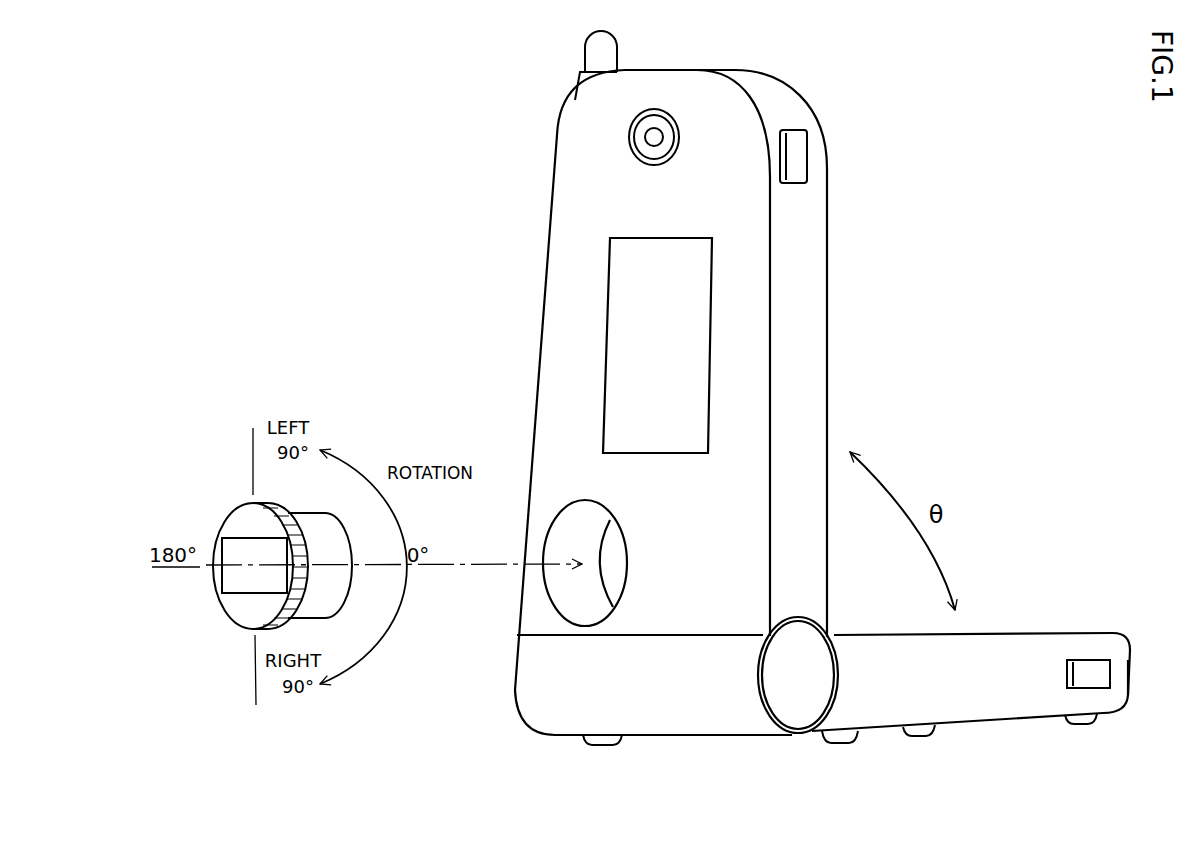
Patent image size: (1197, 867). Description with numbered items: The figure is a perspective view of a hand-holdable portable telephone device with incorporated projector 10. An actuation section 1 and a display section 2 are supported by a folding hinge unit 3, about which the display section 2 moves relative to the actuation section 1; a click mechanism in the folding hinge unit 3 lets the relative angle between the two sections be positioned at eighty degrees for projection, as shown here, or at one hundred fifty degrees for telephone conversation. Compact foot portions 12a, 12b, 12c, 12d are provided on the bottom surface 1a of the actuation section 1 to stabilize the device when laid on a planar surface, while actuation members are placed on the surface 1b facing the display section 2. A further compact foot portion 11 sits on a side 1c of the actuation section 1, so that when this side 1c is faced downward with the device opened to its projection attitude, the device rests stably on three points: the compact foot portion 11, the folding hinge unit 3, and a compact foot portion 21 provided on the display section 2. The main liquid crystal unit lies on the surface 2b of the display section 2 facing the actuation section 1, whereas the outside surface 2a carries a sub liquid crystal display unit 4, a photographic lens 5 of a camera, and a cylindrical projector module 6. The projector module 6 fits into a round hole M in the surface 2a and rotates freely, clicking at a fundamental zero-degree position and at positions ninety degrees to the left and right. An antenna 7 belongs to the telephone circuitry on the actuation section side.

The portable telephone device with incorporated projector 10 is at (1052, 325).
The actuation section 1 is at (885, 717).
The bottom surface 1a is at (1001, 726).
The surface 1b is at (1006, 630).
The side 1c is at (978, 695).
The display section 2 is at (778, 98).
The outside surface 2a is at (588, 207).
The surface 2b is at (830, 276).
The folding hinge unit 3 is at (786, 708).
The sub liquid crystal display unit 4 is at (617, 336).
The photographic lens 5 is at (656, 120).
The projector module 6 is at (226, 604).
The antenna 7 is at (585, 50).
The compact foot portion 11 is at (1092, 667).
The compact foot portion 12a is at (836, 748).
The compact foot portion 12b is at (610, 748).
The compact foot portion 12c is at (1088, 727).
The compact foot portion 12d is at (920, 738).
The compact foot portion 21 is at (800, 158).
The round hole M is at (625, 543).